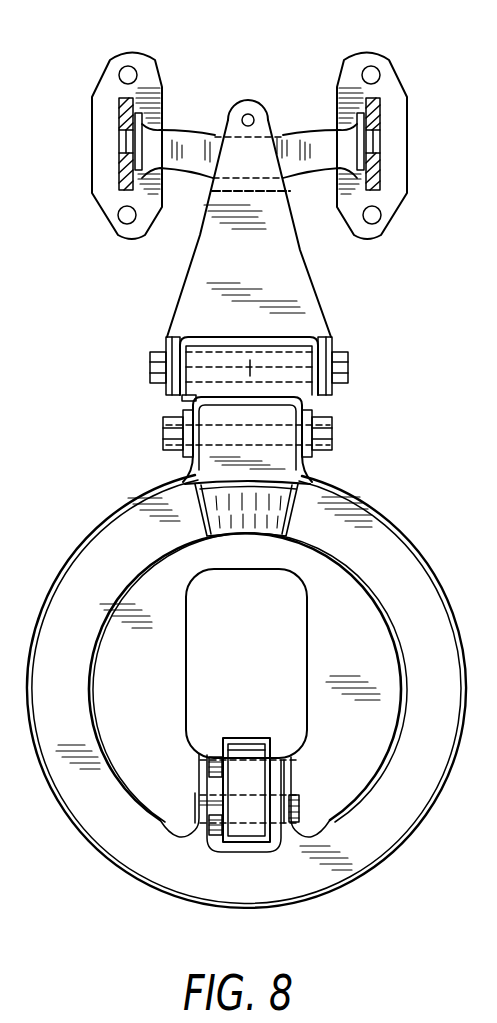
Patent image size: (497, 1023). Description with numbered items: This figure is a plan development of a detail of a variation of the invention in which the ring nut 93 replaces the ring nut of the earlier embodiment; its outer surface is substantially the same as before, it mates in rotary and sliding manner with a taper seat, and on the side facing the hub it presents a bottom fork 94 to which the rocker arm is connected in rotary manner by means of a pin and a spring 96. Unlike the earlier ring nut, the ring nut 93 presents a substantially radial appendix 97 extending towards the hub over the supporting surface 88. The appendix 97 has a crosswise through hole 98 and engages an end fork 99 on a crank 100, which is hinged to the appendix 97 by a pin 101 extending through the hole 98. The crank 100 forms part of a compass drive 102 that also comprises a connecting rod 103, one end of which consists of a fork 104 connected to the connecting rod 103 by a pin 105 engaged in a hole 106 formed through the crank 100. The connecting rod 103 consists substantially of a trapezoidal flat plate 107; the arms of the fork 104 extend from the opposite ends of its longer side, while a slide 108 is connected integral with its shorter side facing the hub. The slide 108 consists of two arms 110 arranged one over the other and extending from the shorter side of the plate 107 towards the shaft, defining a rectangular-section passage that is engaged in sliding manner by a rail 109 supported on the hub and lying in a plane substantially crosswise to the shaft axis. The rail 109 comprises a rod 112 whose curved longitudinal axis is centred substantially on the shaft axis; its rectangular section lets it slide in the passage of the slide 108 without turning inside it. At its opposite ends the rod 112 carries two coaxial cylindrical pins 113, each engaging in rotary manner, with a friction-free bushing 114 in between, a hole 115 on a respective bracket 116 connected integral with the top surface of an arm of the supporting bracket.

The supporting surface 88 is at (253, 514).
The ring nut 93 is at (416, 531).
The bottom fork 94 is at (282, 780).
The spring 96 is at (216, 778).
The radial appendix 97 is at (305, 453).
The crosswise through hole 98 is at (305, 416).
The end fork 99 is at (190, 403).
The crank 100 is at (197, 370).
The pin 101 is at (165, 440).
The compass drive 102 is at (160, 351).
The connecting rod 103 is at (315, 301).
The fork 104 is at (328, 332).
The pin 105 is at (358, 354).
The hole 106 is at (250, 336).
The flat plate 107 is at (282, 272).
The slide 108 is at (280, 130).
The rail 109 is at (192, 131).
The arms 110 is at (255, 150).
The rod 112 is at (300, 153).
The cylindrical pins 113 is at (121, 135).
The friction-free bushing 114 is at (120, 127).
The hole 115 is at (122, 92).
The bracket 116 is at (122, 178).